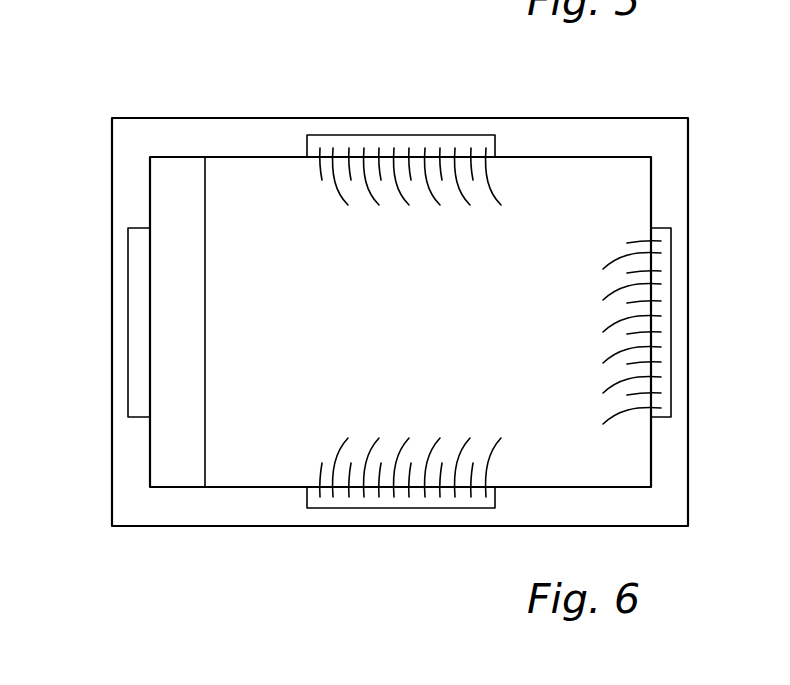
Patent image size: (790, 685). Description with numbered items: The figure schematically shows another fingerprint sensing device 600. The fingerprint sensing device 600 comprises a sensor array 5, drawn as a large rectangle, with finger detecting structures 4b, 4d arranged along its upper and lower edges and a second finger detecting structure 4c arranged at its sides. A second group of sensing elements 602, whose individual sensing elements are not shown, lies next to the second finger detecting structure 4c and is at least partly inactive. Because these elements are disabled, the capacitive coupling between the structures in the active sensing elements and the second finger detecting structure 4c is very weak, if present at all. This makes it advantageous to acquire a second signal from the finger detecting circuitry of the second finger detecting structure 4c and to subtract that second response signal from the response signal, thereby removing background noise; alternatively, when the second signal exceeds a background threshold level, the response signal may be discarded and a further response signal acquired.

The fingerprint sensing device 600 is at (130, 54).
The second group of sensing elements 602 is at (173, 171).
The sensor array 5 is at (602, 190).
The finger detecting structure 4b is at (449, 136).
The finger detecting structure 4d is at (401, 498).
The second finger detecting structure 4c is at (140, 313).